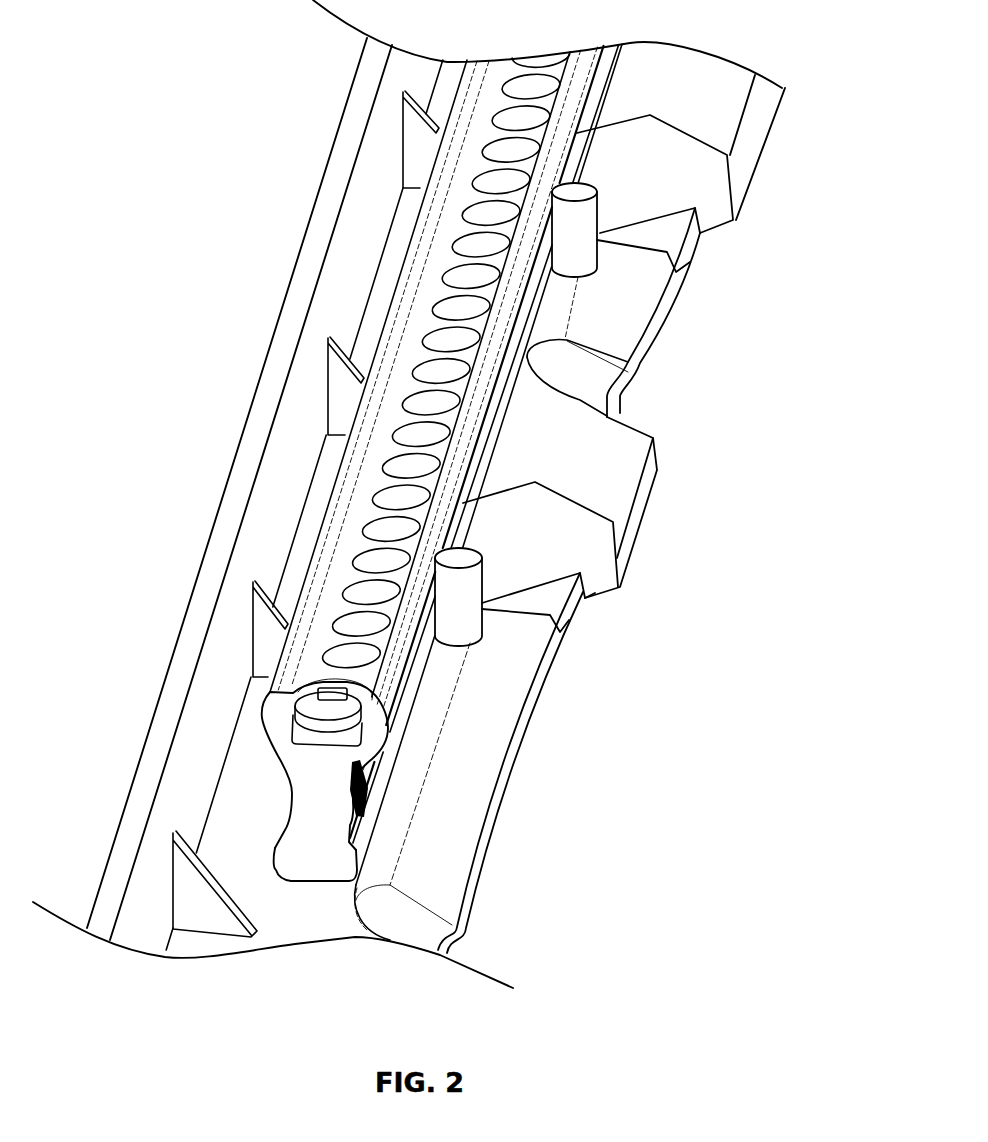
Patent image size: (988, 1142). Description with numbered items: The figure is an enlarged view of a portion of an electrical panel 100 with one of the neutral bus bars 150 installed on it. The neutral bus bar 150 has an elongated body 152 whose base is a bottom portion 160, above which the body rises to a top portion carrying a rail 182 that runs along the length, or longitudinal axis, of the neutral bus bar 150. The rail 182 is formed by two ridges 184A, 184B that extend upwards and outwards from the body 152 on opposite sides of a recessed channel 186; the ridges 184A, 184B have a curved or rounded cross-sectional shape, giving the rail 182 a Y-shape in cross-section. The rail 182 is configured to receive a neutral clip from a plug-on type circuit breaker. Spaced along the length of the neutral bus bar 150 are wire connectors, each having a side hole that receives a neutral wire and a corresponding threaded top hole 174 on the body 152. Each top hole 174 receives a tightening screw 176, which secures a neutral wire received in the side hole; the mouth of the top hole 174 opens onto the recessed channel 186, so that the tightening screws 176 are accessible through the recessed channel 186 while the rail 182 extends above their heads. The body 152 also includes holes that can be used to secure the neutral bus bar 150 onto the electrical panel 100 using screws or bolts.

The electrical panel 100 is at (130, 40).
The neutral bus bar 150 is at (590, 112).
The body 152 is at (347, 835).
The bottom portion 160 is at (291, 879).
The top hole 174 is at (385, 652).
The tightening screw 176 is at (325, 726).
The rail 182 is at (495, 407).
The ridge 184A is at (390, 317).
The ridge 184B is at (487, 358).
The recessed channel 186 is at (592, 190).